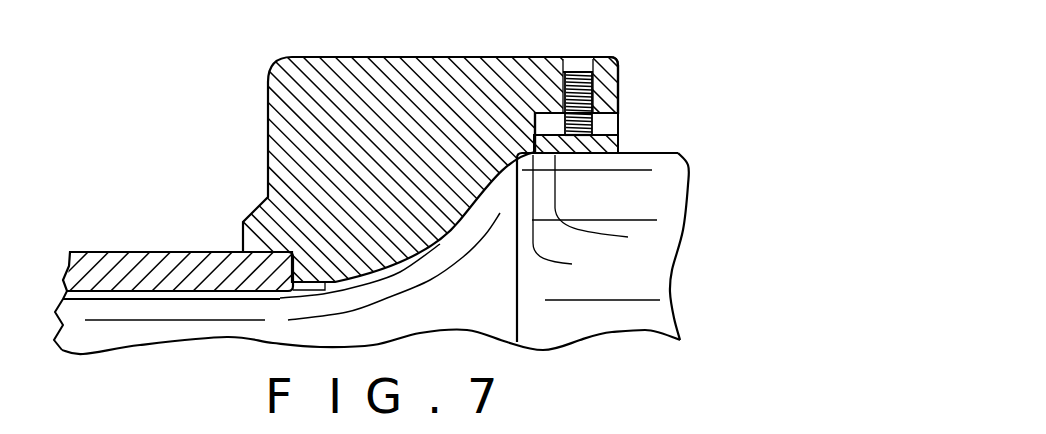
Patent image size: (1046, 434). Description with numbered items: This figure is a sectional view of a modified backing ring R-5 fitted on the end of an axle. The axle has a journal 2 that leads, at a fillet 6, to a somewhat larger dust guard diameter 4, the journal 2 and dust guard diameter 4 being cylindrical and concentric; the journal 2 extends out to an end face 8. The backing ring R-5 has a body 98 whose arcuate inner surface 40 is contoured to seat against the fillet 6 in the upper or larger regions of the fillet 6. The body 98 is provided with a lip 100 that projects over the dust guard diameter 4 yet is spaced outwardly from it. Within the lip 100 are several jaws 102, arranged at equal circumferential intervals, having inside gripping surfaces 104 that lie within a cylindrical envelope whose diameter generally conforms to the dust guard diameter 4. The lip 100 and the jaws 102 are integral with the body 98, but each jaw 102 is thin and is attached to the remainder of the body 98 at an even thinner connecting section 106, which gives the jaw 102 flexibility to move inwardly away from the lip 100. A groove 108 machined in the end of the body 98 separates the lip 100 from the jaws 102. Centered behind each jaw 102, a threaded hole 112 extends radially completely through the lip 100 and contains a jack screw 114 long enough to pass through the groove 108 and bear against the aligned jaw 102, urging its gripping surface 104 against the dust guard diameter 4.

The journal 2 is at (113, 338).
The dust guard diameter 4 is at (653, 313).
The fillet 6 is at (448, 320).
The end face 8 is at (635, 52).
The arcuate inner surface 40 is at (458, 224).
The body 98 is at (352, 80).
The lip 100 is at (507, 72).
The jaws 102 is at (620, 144).
The gripping surfaces 104 is at (611, 203).
The connecting section 106 is at (573, 215).
The groove 108 is at (610, 127).
The threaded hole 112 is at (572, 62).
The jack screw 114 is at (594, 96).
The backing ring R-5 is at (675, 45).